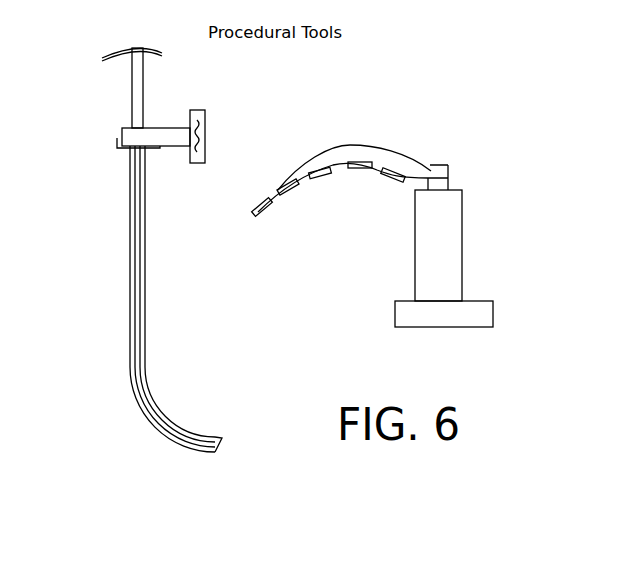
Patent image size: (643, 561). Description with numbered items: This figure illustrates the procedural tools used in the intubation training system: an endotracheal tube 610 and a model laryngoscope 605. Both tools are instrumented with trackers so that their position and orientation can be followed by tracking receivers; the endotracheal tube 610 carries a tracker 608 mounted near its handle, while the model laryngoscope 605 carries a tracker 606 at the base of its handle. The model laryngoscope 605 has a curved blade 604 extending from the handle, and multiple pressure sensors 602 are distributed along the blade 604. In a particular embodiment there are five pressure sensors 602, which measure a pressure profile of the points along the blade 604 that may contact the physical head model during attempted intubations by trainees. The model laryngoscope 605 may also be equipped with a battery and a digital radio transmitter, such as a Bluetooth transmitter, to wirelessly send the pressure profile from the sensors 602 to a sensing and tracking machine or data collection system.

The pressure sensors 602 is at (362, 168).
The blade 604 is at (430, 173).
The model laryngoscope 605 is at (453, 263).
The tracker 606 is at (482, 313).
The tracker 608 is at (192, 147).
The endotracheal tube 610 is at (138, 233).